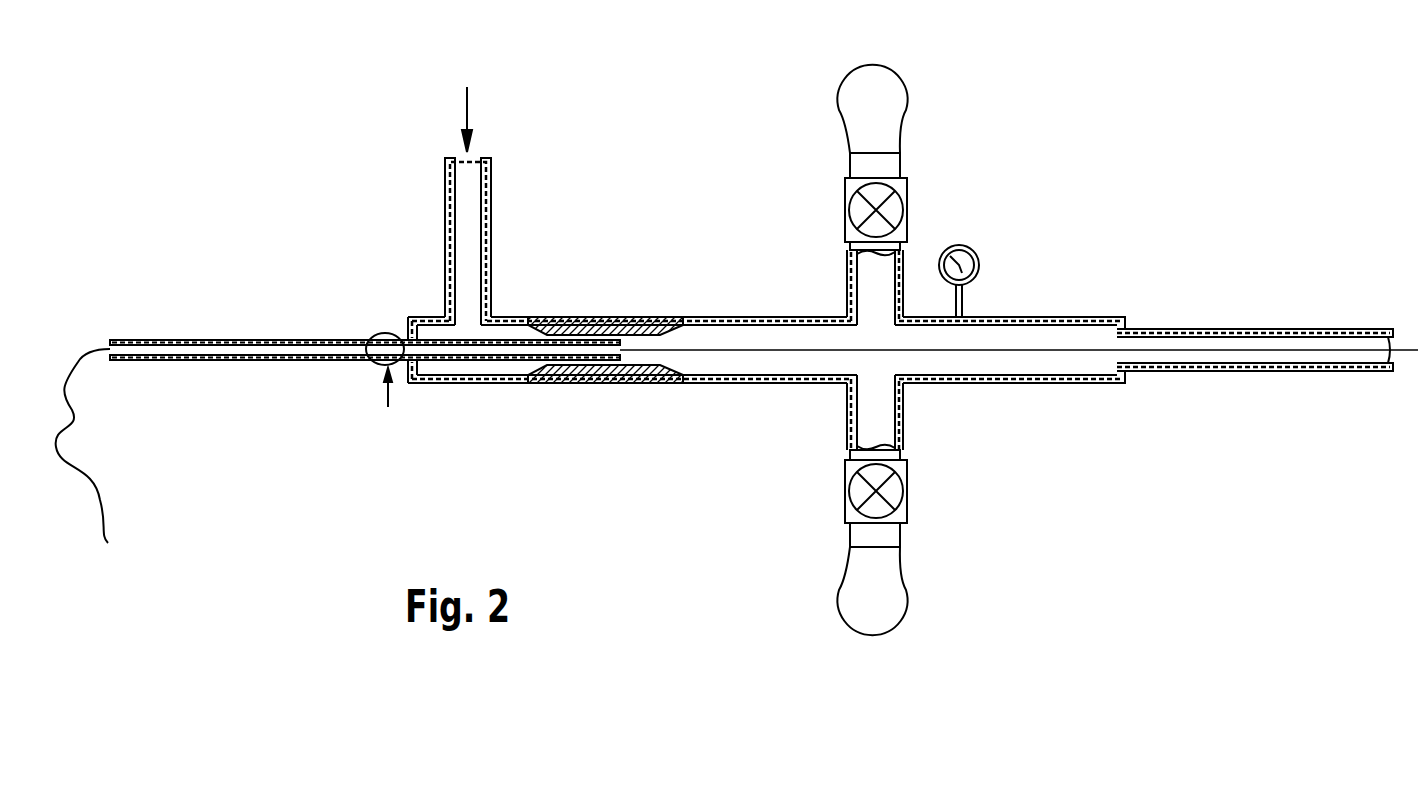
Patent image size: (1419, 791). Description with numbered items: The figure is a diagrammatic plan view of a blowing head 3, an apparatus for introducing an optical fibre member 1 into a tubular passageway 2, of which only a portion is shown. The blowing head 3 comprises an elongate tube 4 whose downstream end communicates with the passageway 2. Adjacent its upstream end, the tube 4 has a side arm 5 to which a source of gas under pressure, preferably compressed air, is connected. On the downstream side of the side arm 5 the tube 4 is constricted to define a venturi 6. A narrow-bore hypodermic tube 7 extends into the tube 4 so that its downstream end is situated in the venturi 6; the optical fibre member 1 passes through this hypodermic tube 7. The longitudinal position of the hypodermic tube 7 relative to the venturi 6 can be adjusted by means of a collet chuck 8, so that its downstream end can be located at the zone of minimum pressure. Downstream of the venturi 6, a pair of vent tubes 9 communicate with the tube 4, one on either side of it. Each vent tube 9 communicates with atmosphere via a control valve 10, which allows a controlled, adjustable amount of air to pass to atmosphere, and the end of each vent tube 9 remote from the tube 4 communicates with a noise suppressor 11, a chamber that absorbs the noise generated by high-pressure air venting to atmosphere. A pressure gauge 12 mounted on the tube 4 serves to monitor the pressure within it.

The optical fibre member 1 is at (105, 510).
The tubular passageway 2 is at (1175, 328).
The blowing head 3 is at (692, 178).
The elongate tube 4 is at (753, 383).
The side arm 5 is at (492, 205).
The venturi 6 is at (627, 325).
The hypodermic tube 7 is at (213, 362).
The collet chuck 8 is at (386, 333).
The vent tube 9 is at (860, 272).
The control valve 10 is at (897, 210).
The noise suppressor 11 is at (897, 110).
The pressure gauge 12 is at (977, 262).